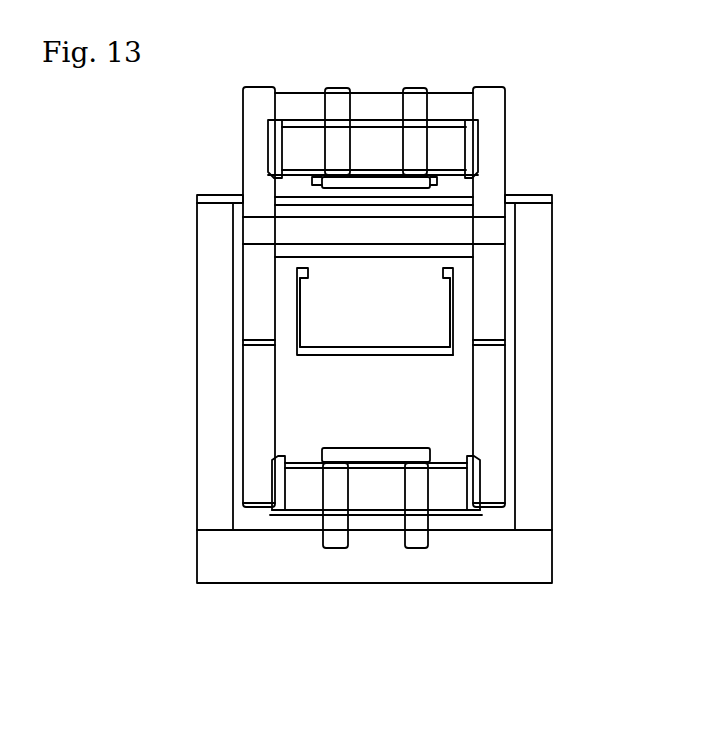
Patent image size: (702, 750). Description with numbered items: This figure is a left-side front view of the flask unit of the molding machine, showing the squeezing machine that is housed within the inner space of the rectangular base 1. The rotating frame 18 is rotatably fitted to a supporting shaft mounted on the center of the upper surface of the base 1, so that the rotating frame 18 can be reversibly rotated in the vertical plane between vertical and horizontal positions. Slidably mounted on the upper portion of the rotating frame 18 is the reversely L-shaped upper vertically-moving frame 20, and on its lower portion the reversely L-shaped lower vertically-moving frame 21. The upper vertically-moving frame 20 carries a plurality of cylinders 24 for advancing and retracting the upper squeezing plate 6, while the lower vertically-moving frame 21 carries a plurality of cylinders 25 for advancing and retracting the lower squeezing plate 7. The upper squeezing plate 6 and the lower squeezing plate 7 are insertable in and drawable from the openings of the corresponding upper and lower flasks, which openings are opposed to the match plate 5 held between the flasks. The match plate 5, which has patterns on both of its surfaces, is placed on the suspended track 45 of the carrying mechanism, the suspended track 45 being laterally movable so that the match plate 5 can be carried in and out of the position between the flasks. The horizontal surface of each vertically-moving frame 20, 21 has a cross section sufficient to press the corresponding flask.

The base 1 is at (200, 405).
The rotating frame 18 is at (493, 152).
The cylinders 24 is at (333, 96).
The upper vertically-moving frame 20 is at (445, 125).
The upper squeezing plate 6 is at (378, 183).
The suspended track 45 is at (302, 318).
The match plate 5 is at (372, 351).
The lower squeezing plate 7 is at (398, 447).
The lower vertically-moving frame 21 is at (377, 517).
The cylinders 25 is at (428, 545).